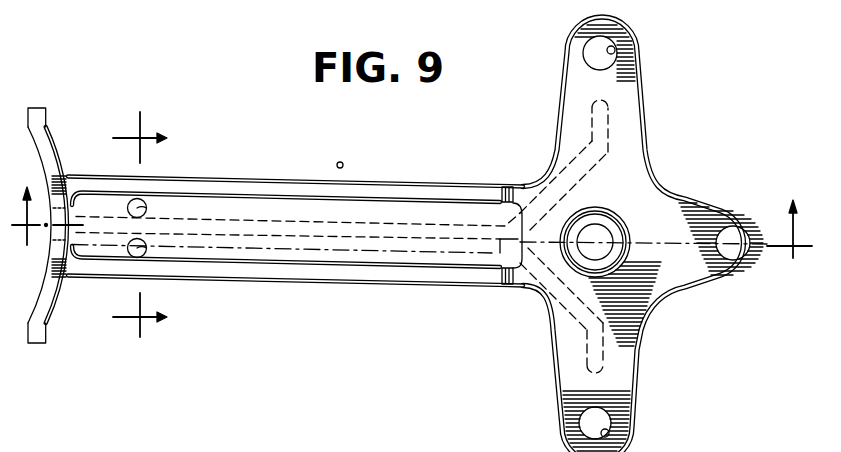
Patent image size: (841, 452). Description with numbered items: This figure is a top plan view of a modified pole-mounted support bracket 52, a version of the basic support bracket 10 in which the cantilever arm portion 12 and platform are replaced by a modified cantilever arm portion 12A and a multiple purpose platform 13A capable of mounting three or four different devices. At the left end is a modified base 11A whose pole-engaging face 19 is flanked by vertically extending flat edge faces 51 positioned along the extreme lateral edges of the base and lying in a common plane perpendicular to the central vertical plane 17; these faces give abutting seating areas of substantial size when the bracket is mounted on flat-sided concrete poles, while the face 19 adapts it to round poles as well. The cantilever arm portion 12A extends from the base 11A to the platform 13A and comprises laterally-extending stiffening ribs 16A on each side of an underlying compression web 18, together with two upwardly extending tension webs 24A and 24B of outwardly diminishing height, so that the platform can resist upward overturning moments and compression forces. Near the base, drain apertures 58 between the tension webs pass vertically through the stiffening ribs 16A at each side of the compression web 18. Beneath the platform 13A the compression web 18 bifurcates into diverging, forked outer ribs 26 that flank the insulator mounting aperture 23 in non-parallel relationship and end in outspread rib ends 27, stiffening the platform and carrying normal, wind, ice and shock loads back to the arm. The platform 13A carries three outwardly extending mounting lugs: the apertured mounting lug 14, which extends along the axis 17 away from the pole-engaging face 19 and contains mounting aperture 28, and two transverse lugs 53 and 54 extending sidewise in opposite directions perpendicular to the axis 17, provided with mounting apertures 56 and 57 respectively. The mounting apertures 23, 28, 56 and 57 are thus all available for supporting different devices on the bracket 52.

The support bracket 10 is at (412, 245).
The cantilever arm portion 12 is at (127, 224).
The base 11A is at (54, 138).
The cantilever arm portion 12A is at (295, 181).
The multiple purpose platform 13A is at (641, 192).
The mounting lug 14 is at (716, 218).
The stiffening ribs 16A is at (397, 207).
The central vertical plane 17 is at (658, 246).
The compression web 18 is at (404, 250).
The pole-engaging face 19 is at (42, 291).
The insulator mounting aperture 23 is at (593, 228).
The tension web 24A is at (217, 181).
The tension web 24B is at (269, 273).
The forked outer ribs 26 is at (563, 165).
The outspread rib ends 27 is at (591, 108).
The mounting aperture 28 is at (731, 254).
The flat edge faces 51 is at (27, 118).
The bracket 52 is at (330, 180).
The transverse lug 53 is at (613, 89).
The transverse lug 54 is at (613, 395).
The mounting aperture 56 is at (617, 49).
The mounting aperture 57 is at (608, 435).
The drain apertures 58 is at (138, 199).